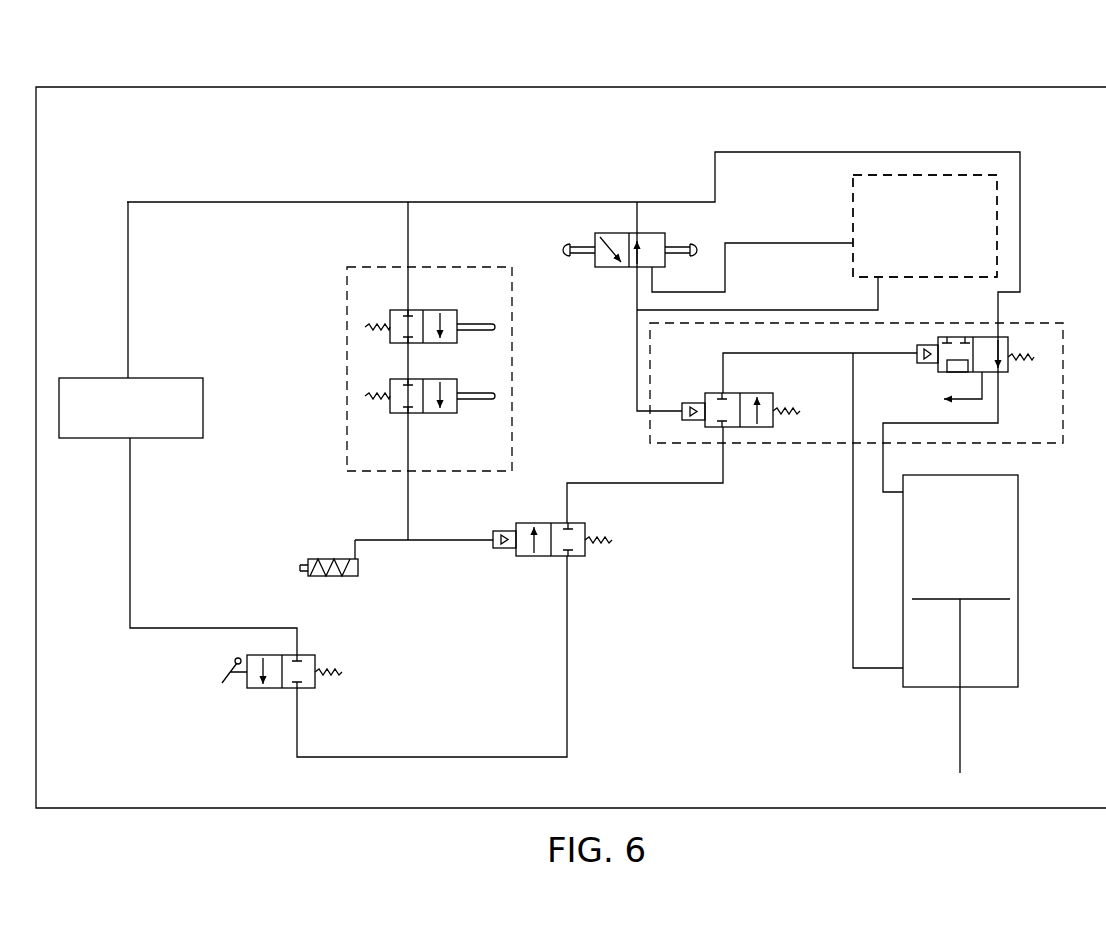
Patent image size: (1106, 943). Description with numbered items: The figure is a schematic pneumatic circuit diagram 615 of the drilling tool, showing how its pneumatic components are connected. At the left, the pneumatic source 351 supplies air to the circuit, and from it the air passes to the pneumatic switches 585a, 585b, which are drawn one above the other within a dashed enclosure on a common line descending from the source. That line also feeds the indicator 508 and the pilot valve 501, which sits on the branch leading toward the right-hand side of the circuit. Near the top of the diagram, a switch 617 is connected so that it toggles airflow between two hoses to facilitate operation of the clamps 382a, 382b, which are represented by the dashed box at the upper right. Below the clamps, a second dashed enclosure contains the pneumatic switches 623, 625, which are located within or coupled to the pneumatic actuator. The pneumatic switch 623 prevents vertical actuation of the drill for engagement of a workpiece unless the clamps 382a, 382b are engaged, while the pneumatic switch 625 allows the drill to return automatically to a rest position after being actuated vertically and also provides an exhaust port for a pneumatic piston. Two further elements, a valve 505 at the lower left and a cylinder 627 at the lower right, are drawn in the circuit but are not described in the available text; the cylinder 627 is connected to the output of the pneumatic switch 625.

The pneumatic circuit diagram 615 is at (742, 60).
The pneumatic source 351 is at (155, 378).
The clamp 382a is at (897, 175).
The clamp 382b is at (953, 192).
The switch 617 is at (620, 232).
The pneumatic switch 585a is at (430, 310).
The pneumatic switch 585b is at (430, 413).
The pneumatic switch 623 is at (768, 427).
The pneumatic switch 625 is at (1010, 360).
The cylinder 627 is at (1018, 519).
The indicator 508 is at (326, 559).
The pilot valve 501 is at (578, 556).
The manual valve 505 is at (268, 688).